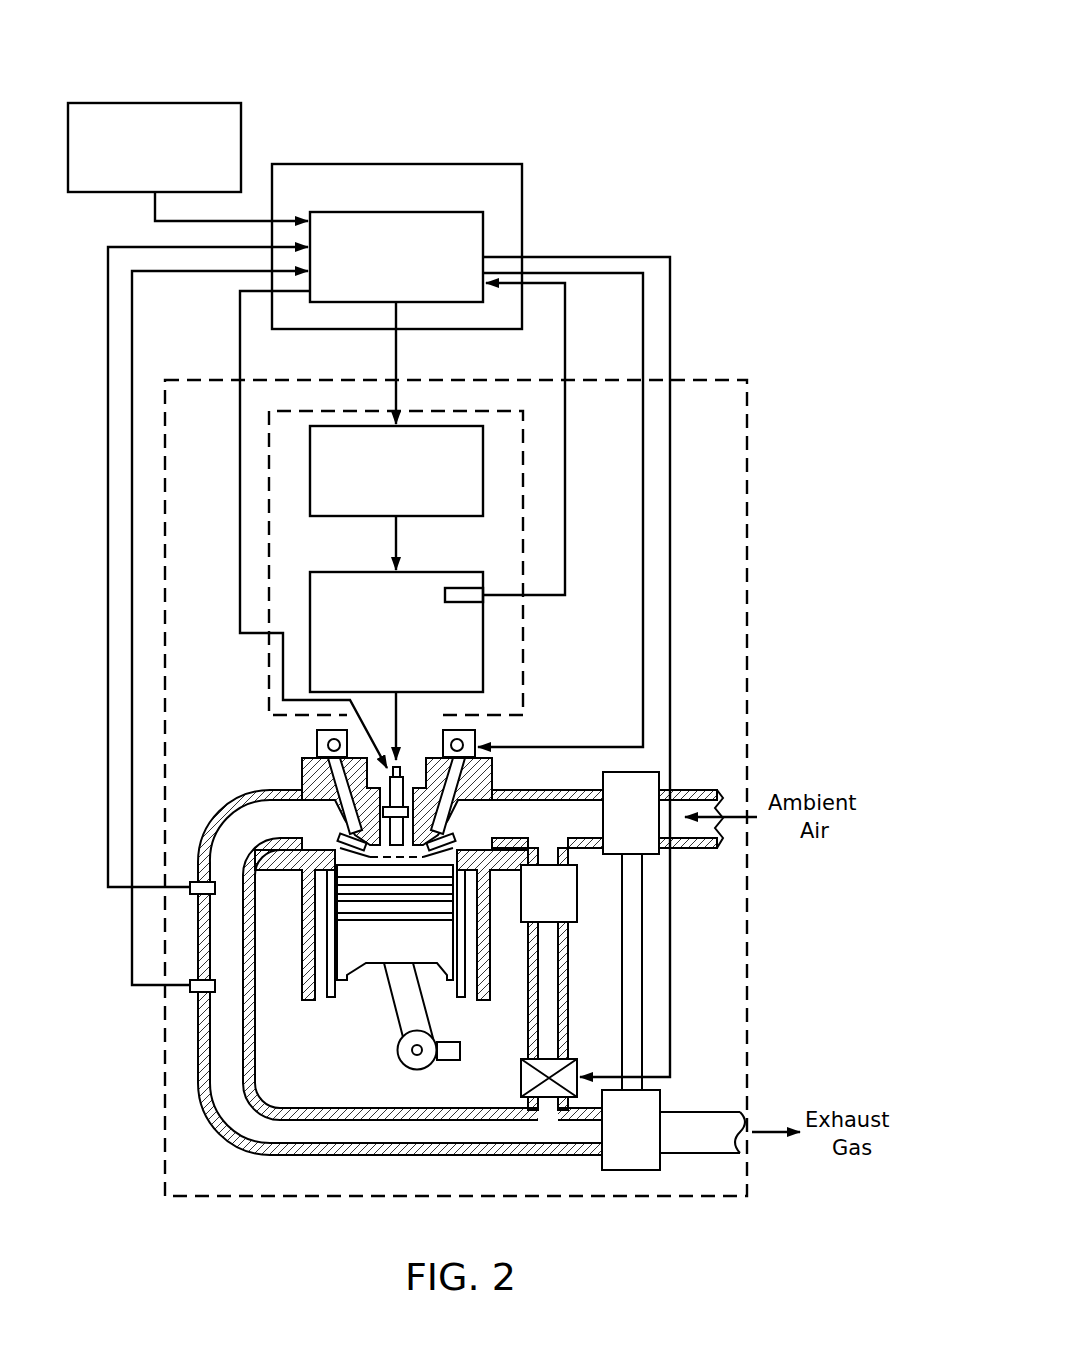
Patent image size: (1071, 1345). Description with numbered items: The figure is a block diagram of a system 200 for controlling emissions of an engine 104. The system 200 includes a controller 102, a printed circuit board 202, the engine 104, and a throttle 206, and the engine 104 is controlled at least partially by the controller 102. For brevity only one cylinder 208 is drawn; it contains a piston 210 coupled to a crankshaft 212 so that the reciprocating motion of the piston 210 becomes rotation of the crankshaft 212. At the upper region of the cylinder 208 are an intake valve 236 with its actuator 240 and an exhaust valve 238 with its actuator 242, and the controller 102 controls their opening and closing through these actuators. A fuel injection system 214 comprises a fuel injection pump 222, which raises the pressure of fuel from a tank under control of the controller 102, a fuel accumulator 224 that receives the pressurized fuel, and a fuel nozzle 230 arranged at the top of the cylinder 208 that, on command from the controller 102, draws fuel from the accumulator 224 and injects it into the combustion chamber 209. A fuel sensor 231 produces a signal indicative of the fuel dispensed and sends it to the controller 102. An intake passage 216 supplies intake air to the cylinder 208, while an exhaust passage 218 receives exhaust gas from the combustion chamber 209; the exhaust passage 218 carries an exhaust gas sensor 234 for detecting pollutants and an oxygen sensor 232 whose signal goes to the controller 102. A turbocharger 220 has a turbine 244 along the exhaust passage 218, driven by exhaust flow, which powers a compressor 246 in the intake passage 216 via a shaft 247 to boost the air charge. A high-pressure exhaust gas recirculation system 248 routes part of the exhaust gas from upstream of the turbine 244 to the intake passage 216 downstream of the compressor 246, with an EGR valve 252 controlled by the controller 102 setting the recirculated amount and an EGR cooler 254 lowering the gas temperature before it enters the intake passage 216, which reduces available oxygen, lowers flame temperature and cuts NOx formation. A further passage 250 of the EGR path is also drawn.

The system 200 is at (780, 66).
The throttle 206 is at (243, 118).
The printed circuit board 202 is at (522, 191).
The controller 102 is at (465, 212).
The engine 104 is at (747, 380).
The fuel injection system 214 is at (523, 420).
The fuel injection pump 222 is at (483, 470).
The fuel accumulator 224 is at (360, 572).
The fuel sensor 231 is at (461, 588).
The fuel nozzle 230 is at (414, 780).
The actuator 240 is at (478, 735).
The actuator 242 is at (317, 745).
The exhaust valve 238 is at (357, 833).
The intake valve 236 is at (437, 831).
The exhaust passage 218 is at (302, 834).
The intake passage 216 is at (578, 834).
The compressor 246 is at (652, 826).
The EGR cooler 254 is at (571, 906).
The turbocharger 220 is at (652, 941).
The shaft 247 is at (643, 982).
The exhaust gas sensor 234 is at (188, 888).
The oxygen sensor 232 is at (190, 988).
The combustion chamber 209 is at (372, 885).
The cylinder 208 is at (300, 992).
The piston 210 is at (380, 966).
The crankshaft 212 is at (419, 1066).
The exhaust gas recirculation system 248 is at (518, 1046).
The passage wall 250 is at (568, 995).
The EGR valve 252 is at (577, 1065).
The turbine 244 is at (650, 1144).